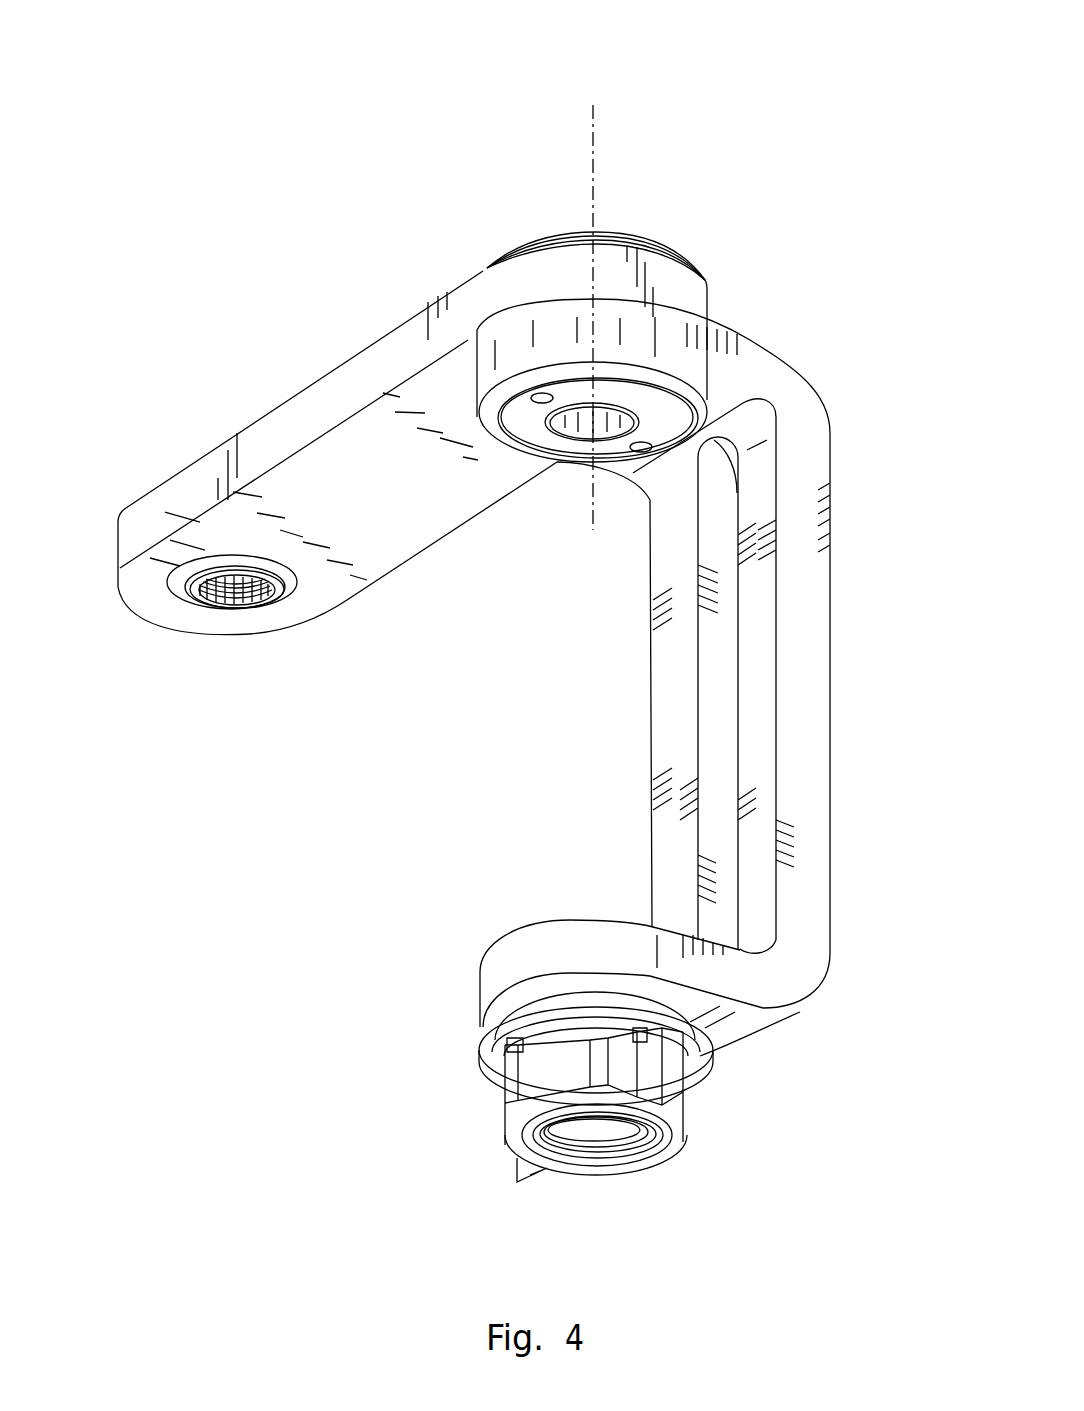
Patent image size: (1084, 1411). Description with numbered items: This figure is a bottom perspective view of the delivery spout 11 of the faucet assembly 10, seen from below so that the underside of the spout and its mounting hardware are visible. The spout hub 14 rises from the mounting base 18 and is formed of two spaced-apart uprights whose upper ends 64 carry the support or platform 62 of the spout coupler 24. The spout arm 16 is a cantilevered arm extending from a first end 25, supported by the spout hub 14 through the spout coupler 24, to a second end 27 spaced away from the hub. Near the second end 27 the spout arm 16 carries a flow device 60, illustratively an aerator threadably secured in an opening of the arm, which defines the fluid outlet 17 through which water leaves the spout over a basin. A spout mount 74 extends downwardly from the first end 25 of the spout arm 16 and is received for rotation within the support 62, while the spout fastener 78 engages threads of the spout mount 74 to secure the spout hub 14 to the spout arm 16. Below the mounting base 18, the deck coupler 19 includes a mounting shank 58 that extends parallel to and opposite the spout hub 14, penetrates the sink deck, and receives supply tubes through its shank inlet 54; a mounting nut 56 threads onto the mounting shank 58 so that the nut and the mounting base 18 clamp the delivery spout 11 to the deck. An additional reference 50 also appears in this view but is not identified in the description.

The faucet assembly 10 is at (275, 146).
The delivery spout 11 is at (436, 216).
The spout hub 14 is at (856, 744).
The spout arm 16 is at (295, 372).
The fluid outlet 17 is at (204, 636).
The mounting base 18 is at (533, 895).
The deck coupler 19 is at (402, 1062).
The spout coupler 24 is at (808, 322).
The first end 25 is at (637, 185).
The second end 27 is at (103, 480).
The central axis 50 is at (590, 125).
The shank inlet 54 is at (639, 1207).
The mounting nut 56 is at (710, 1108).
The mounting shank 58 is at (563, 1172).
The flow device 60 is at (246, 618).
The support 62 is at (740, 360).
The upper ends 64 is at (830, 375).
The spout mount 74 is at (693, 240).
The spout fastener 78 is at (565, 482).